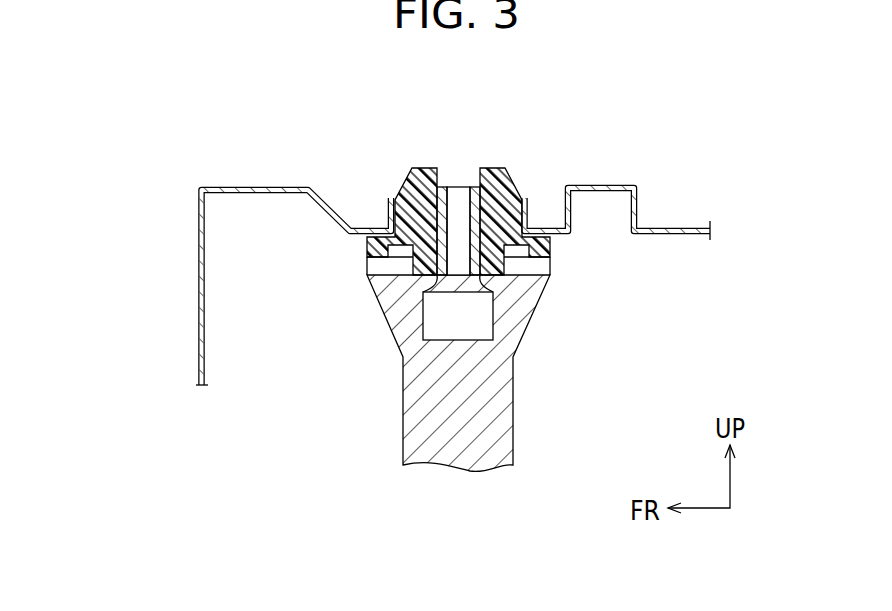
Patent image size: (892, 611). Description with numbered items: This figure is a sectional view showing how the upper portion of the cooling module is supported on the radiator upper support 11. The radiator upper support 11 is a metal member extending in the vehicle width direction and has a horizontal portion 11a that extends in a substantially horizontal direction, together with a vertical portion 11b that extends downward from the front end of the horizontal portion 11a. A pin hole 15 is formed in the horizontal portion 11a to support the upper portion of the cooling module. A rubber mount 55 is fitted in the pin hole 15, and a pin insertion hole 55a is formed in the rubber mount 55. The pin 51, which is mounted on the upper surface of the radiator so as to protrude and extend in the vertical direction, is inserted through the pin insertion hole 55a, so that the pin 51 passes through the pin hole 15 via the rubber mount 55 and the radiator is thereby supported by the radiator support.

The radiator upper support 11 is at (417, 254).
The horizontal portion 11a is at (291, 187).
The vertical portion 11b is at (198, 293).
The pin hole 15 is at (405, 197).
The pin 51 is at (458, 187).
The rubber mount 55 is at (521, 188).
The pin insertion hole 55a is at (440, 180).